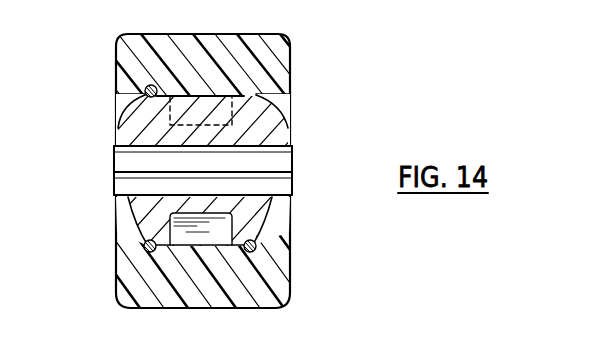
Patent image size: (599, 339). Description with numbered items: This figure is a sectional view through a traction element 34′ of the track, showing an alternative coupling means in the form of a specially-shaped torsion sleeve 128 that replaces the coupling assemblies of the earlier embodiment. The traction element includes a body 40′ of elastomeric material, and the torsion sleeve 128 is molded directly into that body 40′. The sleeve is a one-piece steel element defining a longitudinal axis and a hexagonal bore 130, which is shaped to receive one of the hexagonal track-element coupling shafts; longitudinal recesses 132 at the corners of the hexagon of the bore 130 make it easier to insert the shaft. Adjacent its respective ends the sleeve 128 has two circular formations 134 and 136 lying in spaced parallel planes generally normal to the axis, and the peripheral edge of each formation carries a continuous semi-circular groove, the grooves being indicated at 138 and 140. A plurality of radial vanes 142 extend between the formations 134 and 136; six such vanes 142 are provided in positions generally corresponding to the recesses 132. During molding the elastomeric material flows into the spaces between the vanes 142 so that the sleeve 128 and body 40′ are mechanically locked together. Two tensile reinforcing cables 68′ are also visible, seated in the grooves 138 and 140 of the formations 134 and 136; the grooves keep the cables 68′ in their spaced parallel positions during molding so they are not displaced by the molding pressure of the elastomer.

The traction element 34′ is at (292, 42).
The body 40′ is at (125, 60).
The circular formation 134 is at (171, 92).
The groove 138 is at (144, 92).
The groove 140 is at (263, 115).
The circular formation 136 is at (260, 122).
The longitudinal recesses 132 is at (113, 151).
The hexagonal bore 130 is at (266, 157).
The torsion sleeve 128 is at (290, 200).
The vanes 142 is at (142, 247).
The tensile reinforcing cables 68′ is at (146, 252).